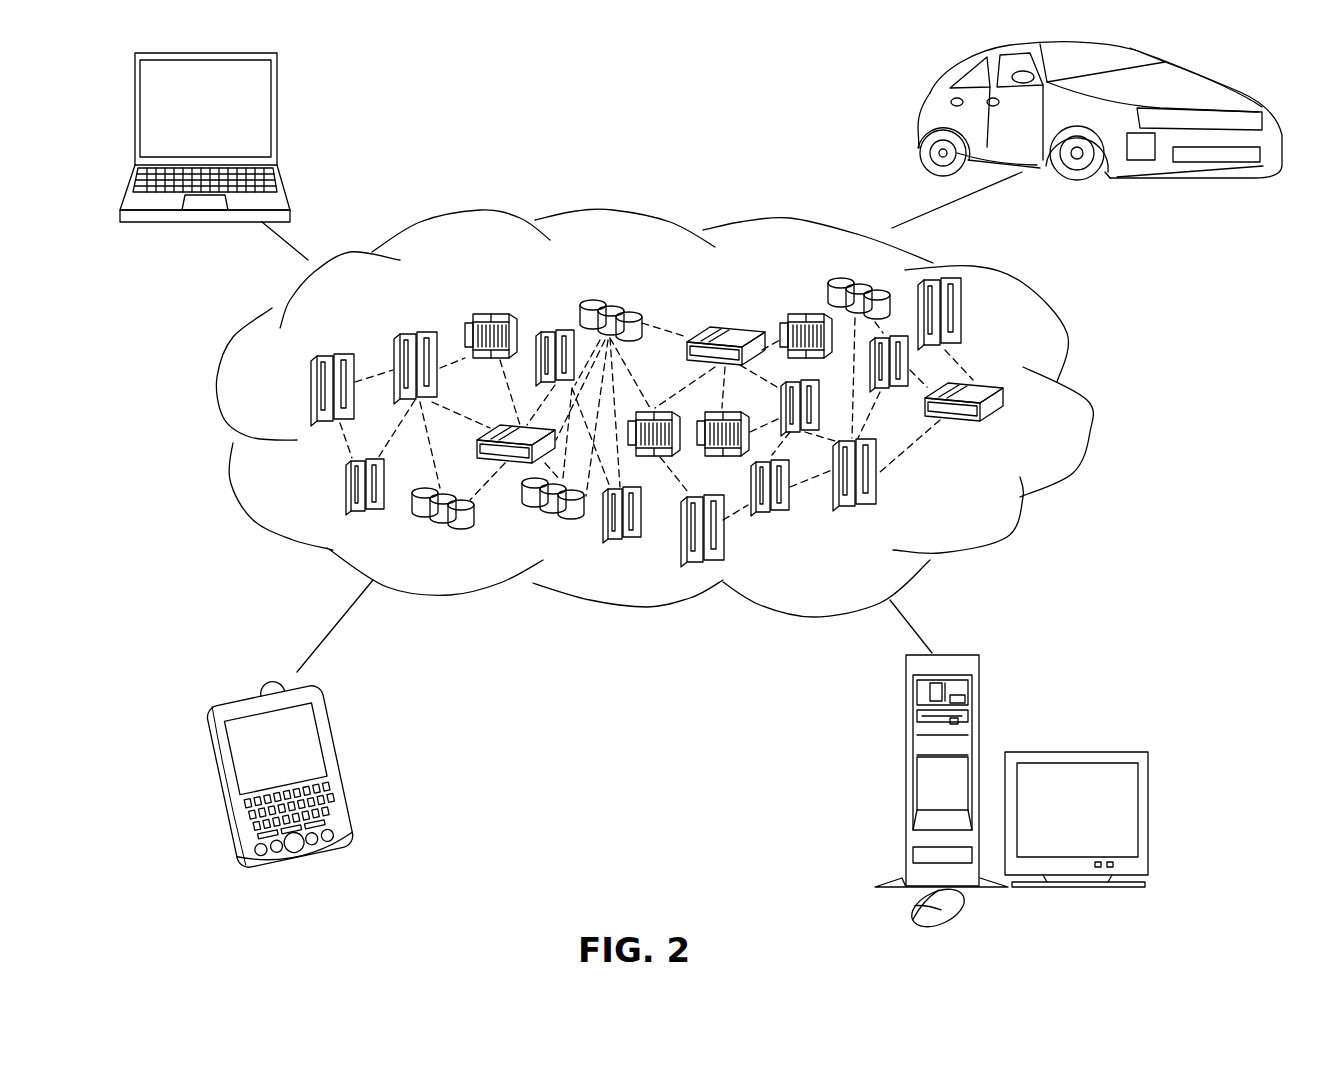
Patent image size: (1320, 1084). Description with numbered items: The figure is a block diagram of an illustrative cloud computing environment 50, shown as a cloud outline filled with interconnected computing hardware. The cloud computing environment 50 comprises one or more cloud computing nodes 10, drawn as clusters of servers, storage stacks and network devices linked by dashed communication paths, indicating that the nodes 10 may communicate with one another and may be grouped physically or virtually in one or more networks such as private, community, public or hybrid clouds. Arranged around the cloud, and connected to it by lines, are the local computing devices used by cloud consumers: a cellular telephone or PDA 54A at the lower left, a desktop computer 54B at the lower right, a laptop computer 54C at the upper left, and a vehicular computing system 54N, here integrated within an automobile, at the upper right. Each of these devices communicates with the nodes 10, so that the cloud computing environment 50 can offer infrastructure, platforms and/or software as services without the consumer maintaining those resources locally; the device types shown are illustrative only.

The cloud computing node 10 is at (980, 502).
The cloud computing environment 50 is at (1080, 400).
The cellular telephone or PDA 54A is at (335, 731).
The desktop computer 54B is at (903, 715).
The laptop computer 54C is at (277, 91).
The vehicular computing system 54N is at (920, 108).